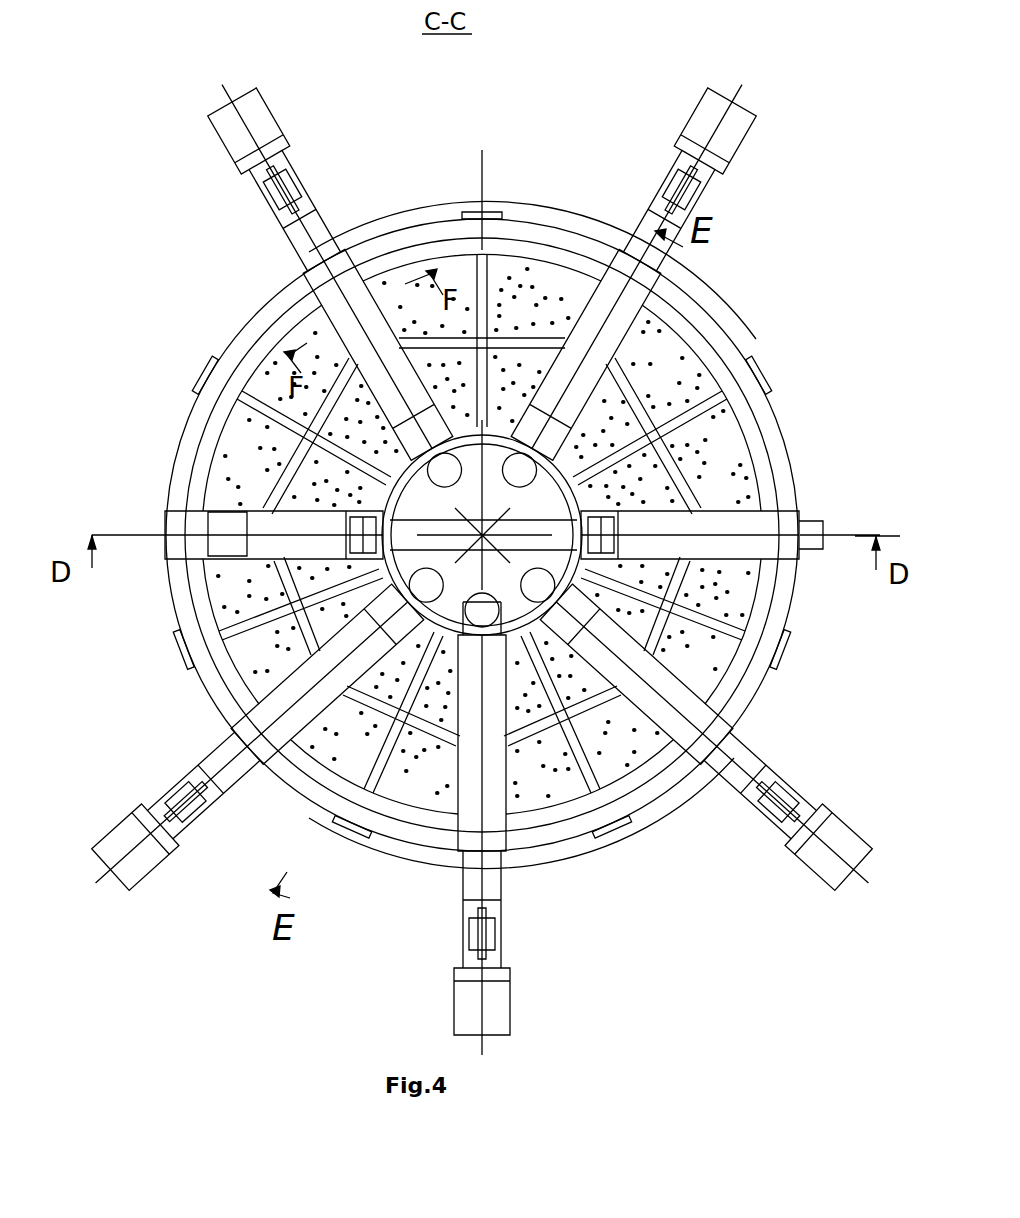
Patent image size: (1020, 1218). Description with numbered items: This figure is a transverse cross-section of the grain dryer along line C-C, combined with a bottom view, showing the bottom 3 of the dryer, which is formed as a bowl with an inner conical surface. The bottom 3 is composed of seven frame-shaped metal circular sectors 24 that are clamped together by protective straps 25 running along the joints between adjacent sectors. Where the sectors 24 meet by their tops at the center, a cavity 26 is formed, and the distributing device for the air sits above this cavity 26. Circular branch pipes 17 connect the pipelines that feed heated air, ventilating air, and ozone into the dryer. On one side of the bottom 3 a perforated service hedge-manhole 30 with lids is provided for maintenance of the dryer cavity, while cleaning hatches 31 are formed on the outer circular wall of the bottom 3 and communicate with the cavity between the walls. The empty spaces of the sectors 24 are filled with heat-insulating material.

The bottom 3 is at (190, 420).
The circular branch pipes 17 is at (521, 211).
The circular sectors 24 is at (530, 285).
The protective straps 25 is at (693, 535).
The cavity 26 is at (527, 500).
The perforated service hedge-manhole 30 is at (218, 527).
The cleaning hatches 31 is at (620, 827).